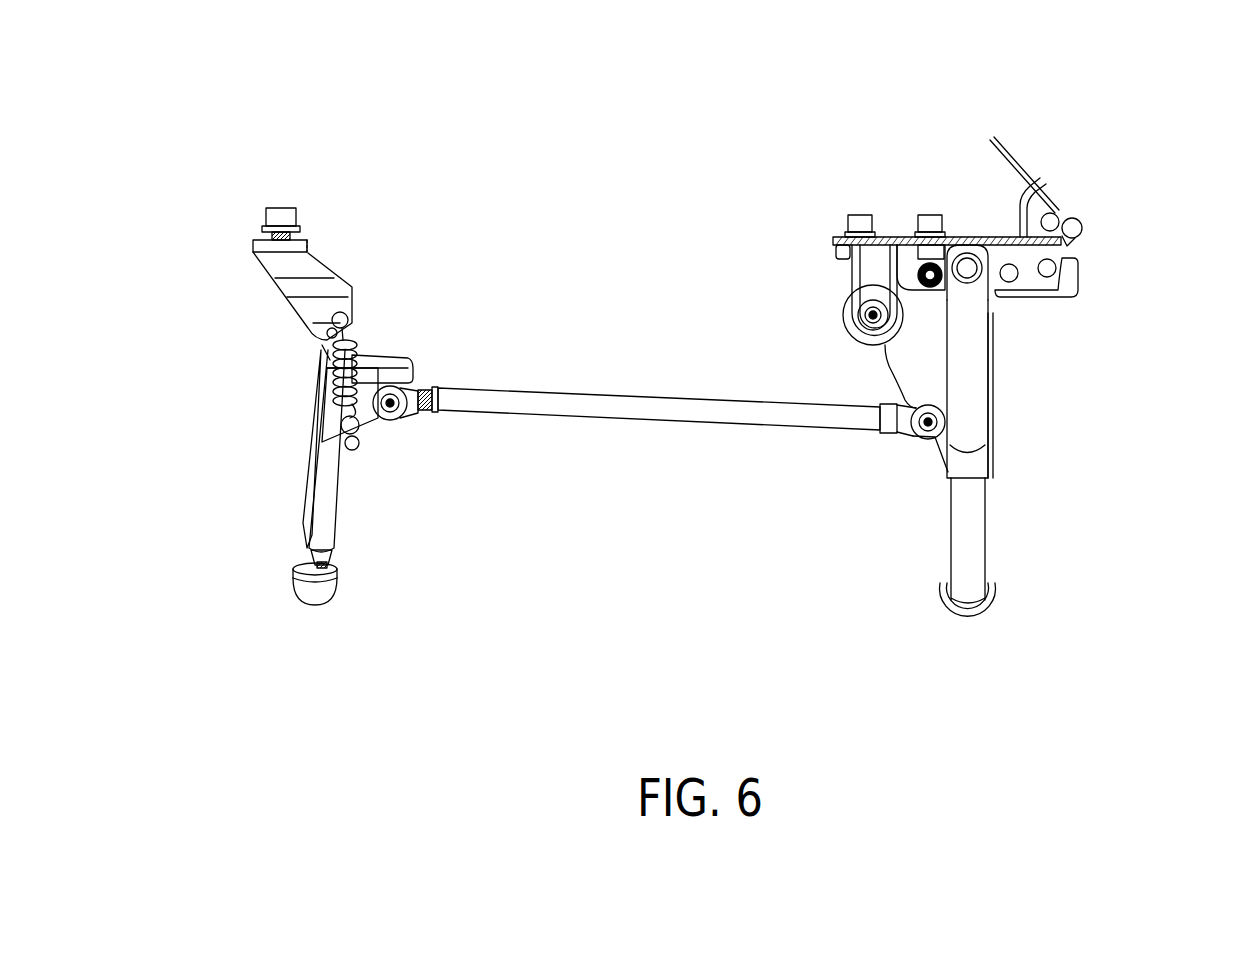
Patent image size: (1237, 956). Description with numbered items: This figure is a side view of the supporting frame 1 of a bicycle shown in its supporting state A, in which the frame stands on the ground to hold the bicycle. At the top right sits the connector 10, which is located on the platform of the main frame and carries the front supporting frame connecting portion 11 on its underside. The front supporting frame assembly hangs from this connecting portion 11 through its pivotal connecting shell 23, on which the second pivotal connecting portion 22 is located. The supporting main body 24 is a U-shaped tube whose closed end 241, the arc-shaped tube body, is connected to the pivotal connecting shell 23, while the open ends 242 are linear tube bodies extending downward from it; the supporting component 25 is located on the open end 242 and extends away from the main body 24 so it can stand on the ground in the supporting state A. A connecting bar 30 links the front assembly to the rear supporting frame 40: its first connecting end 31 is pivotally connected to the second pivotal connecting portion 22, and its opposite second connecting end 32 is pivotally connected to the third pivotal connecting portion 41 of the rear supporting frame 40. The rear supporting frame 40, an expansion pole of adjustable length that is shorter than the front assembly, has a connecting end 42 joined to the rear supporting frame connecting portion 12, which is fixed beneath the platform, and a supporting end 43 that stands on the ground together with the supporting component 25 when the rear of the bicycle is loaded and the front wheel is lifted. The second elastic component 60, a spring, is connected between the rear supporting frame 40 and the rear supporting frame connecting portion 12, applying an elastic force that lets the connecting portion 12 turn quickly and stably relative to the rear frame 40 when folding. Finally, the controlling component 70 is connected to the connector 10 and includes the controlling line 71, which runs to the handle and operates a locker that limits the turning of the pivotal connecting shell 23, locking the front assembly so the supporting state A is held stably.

The supporting frame 1 is at (258, 125).
The connector 10 is at (838, 240).
The front supporting frame connecting portion 11 is at (840, 250).
The rear supporting frame connecting portion 12 is at (262, 243).
The second pivotal connecting portion 22 is at (922, 418).
The pivotal connecting shell 23 is at (992, 328).
The supporting main body 24 is at (957, 57).
The closed end 241 is at (967, 268).
The open end 242 is at (975, 518).
The supporting component 25 is at (965, 612).
The connecting bar 30 is at (640, 408).
The first connecting end 31 is at (905, 435).
The second connecting end 32 is at (406, 415).
The rear supporting frame 40 is at (303, 522).
The third pivotal connecting portion 41 is at (408, 365).
The connecting end 42 is at (320, 345).
The supporting end 43 is at (317, 596).
The second elastic component 60 is at (358, 335).
The controlling component 70 is at (1065, 182).
The controlling line 71 is at (1000, 148).
The supporting state A is at (1108, 632).